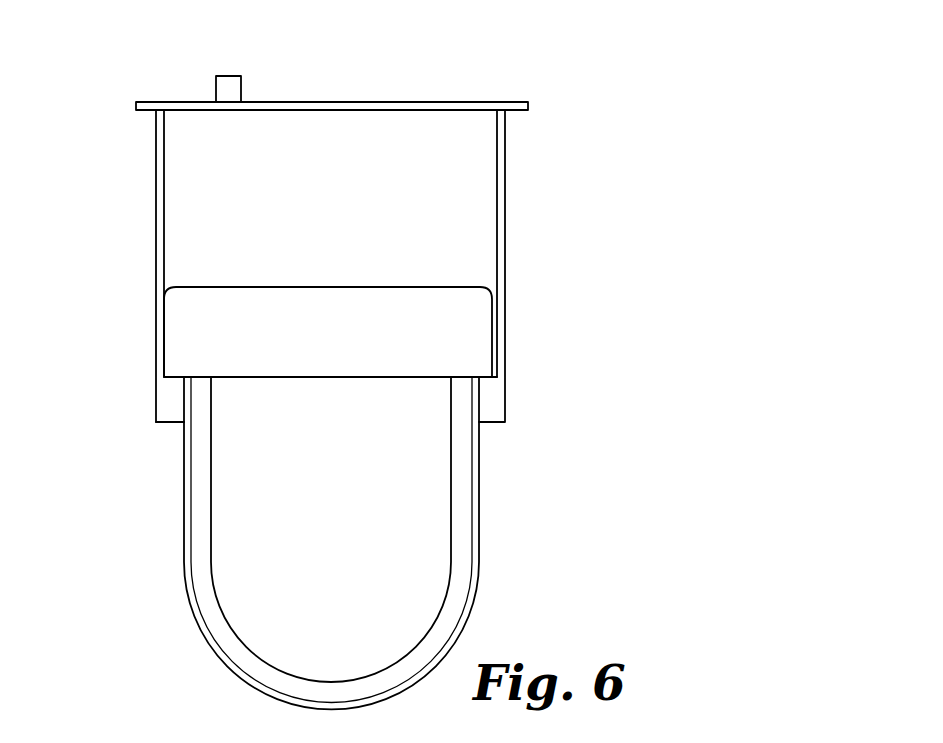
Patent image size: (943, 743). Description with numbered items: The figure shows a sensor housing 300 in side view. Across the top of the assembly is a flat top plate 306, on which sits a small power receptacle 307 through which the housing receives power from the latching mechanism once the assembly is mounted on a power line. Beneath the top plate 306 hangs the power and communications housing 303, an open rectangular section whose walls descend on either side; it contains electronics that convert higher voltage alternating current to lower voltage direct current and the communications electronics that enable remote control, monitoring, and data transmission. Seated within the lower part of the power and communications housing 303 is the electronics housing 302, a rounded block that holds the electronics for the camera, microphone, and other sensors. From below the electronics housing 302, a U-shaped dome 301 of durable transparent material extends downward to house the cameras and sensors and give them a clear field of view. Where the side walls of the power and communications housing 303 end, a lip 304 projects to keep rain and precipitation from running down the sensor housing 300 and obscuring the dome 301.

The sensor housing 300 is at (662, 206).
The dome 301 is at (475, 547).
The electronics housing 302 is at (452, 332).
The power and communications housing 303 is at (215, 223).
The lip 304 is at (172, 410).
The top plate 306 is at (470, 102).
The power receptacle 307 is at (228, 76).